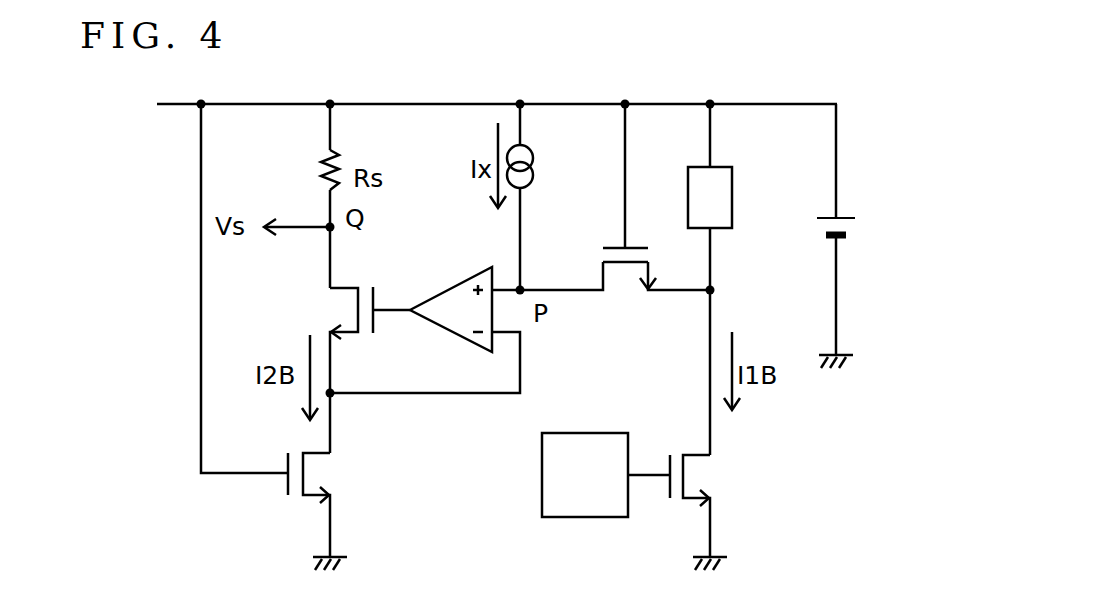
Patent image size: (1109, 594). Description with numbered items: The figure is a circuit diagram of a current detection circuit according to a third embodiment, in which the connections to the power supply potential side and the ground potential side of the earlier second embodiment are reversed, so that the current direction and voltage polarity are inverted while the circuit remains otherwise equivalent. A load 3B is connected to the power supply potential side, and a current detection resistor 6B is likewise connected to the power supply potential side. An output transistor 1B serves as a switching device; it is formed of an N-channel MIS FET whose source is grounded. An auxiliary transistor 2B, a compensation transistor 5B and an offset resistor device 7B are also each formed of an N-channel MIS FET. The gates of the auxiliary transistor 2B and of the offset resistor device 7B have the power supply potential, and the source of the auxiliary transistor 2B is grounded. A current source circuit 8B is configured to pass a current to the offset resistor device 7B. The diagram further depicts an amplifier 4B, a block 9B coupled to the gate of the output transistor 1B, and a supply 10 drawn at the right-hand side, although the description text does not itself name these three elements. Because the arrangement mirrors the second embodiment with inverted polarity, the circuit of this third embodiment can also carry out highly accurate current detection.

The output transistor 1B is at (725, 477).
The auxiliary transistor 2B is at (333, 475).
The load 3B is at (735, 186).
The operational amplifier 4B is at (448, 330).
The compensation transistor 5B is at (348, 283).
The current detection resistor 6B is at (322, 180).
The offset resistor device 7B is at (627, 292).
The current source circuit 8B is at (533, 167).
The control circuit 9B is at (540, 478).
The battery 10 is at (850, 218).